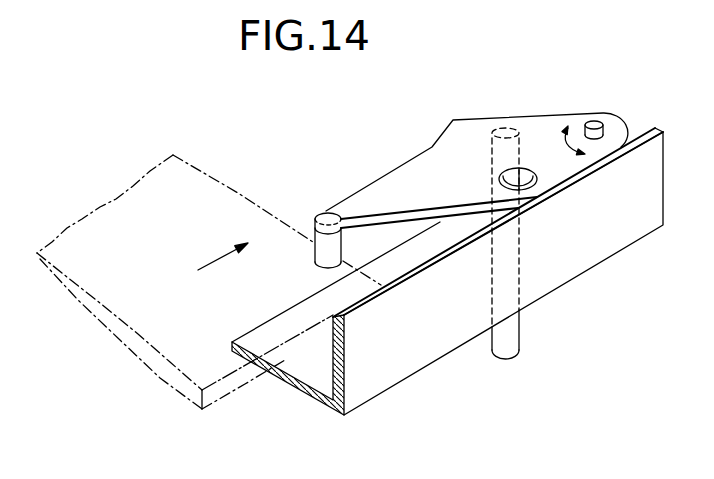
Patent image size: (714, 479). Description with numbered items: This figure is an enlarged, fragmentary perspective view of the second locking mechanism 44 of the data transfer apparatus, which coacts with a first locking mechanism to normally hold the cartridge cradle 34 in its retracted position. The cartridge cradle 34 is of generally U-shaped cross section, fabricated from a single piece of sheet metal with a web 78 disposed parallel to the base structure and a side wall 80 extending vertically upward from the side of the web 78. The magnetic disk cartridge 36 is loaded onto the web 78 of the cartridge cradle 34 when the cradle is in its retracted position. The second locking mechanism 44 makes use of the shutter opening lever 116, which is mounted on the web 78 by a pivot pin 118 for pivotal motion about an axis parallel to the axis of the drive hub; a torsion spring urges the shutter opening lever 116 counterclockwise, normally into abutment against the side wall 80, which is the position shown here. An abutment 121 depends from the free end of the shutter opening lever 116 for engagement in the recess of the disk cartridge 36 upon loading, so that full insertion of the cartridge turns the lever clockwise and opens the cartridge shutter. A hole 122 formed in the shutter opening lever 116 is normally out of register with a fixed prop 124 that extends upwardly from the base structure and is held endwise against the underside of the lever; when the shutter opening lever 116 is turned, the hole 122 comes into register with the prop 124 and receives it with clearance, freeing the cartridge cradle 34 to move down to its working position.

The cartridge cradle 34 is at (447, 298).
The magnetic disk cartridge 36 is at (223, 184).
The second locking mechanism 44 is at (468, 150).
The web 78 is at (303, 370).
The side wall 80 is at (428, 355).
The shutter opening lever 116 is at (382, 174).
The pivot pin 118 is at (598, 124).
The abutment 121 is at (314, 241).
The hole 122 is at (536, 188).
The prop 124 is at (517, 328).